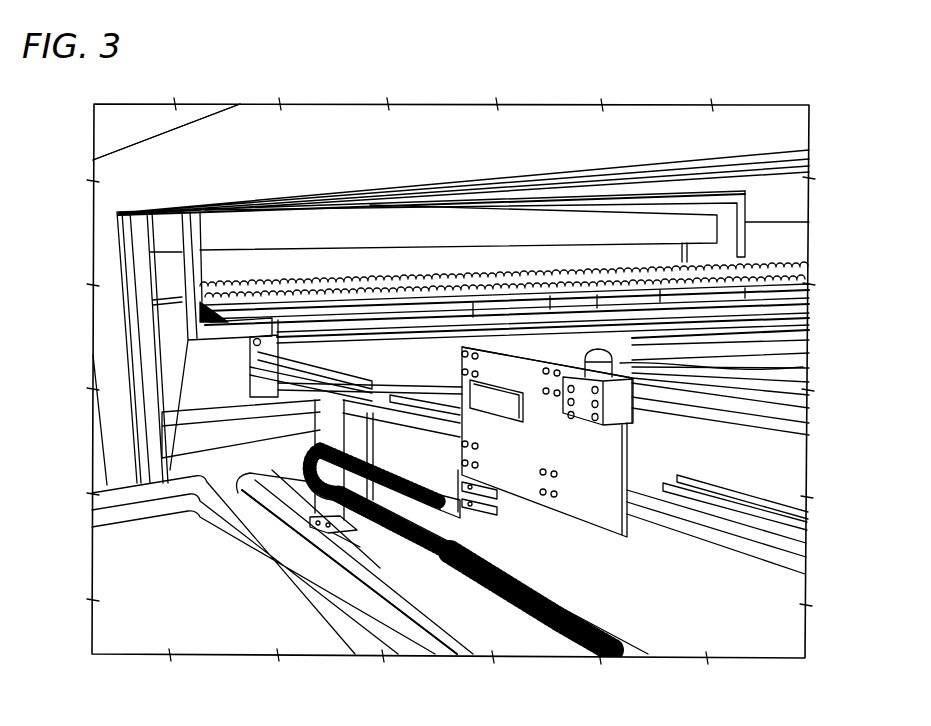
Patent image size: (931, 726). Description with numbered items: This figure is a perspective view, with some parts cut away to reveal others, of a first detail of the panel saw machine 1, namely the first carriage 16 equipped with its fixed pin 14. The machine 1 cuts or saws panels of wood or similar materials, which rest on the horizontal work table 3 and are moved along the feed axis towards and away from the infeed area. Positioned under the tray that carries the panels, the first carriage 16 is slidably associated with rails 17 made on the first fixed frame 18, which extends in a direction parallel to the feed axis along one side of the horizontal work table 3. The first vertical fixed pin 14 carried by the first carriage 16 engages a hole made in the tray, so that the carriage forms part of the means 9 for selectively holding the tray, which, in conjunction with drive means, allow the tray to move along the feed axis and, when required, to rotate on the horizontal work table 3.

The machine 1 is at (275, 113).
The horizontal work table 3 is at (527, 348).
The means for selectively holding the tray 9 is at (527, 447).
The first vertical fixed pin 14 is at (783, 368).
The first carriage 16 is at (568, 483).
The rails 17 is at (335, 330).
The first fixed frame 18 is at (398, 375).